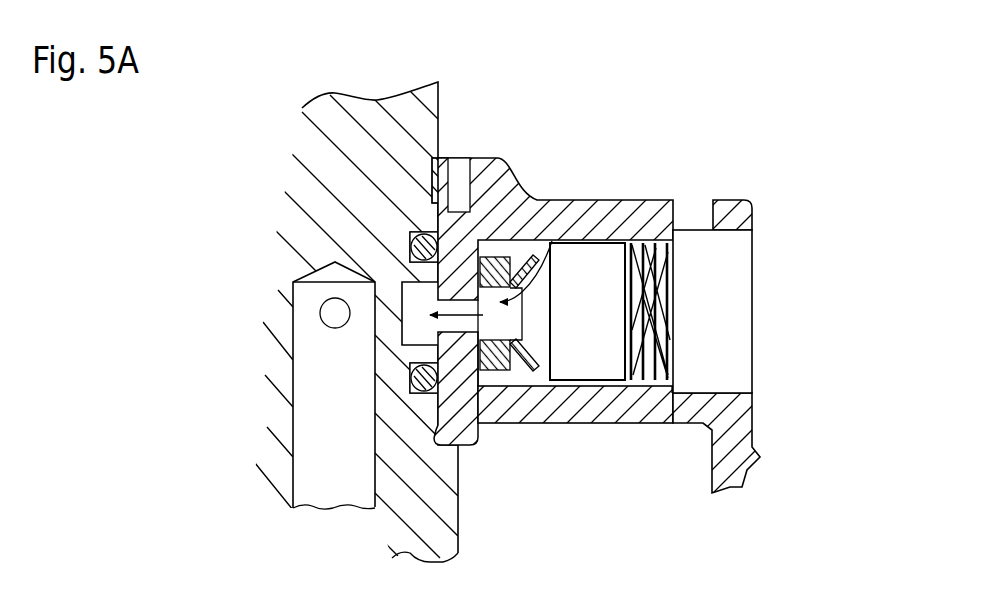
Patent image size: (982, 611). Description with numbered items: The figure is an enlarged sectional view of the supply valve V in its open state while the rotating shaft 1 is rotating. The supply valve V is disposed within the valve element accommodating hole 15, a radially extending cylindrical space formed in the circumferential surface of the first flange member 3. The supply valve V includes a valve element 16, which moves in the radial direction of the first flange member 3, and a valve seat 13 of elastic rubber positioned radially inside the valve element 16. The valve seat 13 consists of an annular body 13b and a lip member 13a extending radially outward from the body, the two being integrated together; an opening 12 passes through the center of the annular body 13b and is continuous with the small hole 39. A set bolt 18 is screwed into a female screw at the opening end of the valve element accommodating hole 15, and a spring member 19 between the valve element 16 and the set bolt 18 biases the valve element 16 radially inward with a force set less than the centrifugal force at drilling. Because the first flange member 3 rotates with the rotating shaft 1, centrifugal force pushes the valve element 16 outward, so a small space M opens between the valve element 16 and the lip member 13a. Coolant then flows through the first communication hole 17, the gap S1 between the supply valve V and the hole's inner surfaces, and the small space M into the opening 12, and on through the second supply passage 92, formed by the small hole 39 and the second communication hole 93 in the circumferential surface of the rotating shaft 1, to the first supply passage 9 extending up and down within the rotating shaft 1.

The rotating shaft 1 is at (450, 525).
The first flange member 3 is at (737, 428).
The first supply passage 9 is at (310, 373).
The opening 12 is at (547, 340).
The valve seat 13 is at (552, 220).
The lip member 13a is at (537, 257).
The annular body 13b is at (522, 256).
The valve element accommodating hole 15 is at (663, 380).
The valve element 16 is at (615, 257).
The first communication hole 17 is at (679, 216).
The set bolt 18 is at (725, 336).
The spring member 19 is at (667, 292).
The small hole 39 is at (450, 334).
The second supply passage 92 is at (503, 381).
The second communication hole 93 is at (413, 344).
The gap S1 is at (590, 257).
The small space M is at (545, 367).
The supply valve V is at (491, 306).